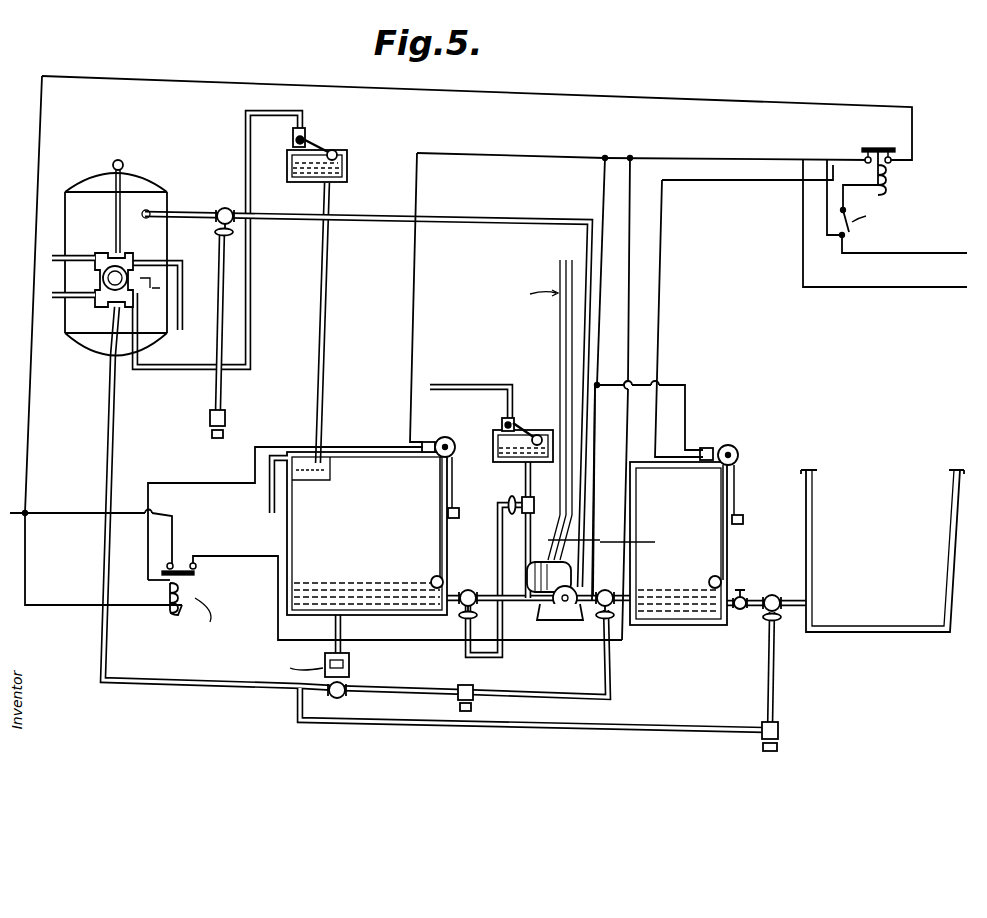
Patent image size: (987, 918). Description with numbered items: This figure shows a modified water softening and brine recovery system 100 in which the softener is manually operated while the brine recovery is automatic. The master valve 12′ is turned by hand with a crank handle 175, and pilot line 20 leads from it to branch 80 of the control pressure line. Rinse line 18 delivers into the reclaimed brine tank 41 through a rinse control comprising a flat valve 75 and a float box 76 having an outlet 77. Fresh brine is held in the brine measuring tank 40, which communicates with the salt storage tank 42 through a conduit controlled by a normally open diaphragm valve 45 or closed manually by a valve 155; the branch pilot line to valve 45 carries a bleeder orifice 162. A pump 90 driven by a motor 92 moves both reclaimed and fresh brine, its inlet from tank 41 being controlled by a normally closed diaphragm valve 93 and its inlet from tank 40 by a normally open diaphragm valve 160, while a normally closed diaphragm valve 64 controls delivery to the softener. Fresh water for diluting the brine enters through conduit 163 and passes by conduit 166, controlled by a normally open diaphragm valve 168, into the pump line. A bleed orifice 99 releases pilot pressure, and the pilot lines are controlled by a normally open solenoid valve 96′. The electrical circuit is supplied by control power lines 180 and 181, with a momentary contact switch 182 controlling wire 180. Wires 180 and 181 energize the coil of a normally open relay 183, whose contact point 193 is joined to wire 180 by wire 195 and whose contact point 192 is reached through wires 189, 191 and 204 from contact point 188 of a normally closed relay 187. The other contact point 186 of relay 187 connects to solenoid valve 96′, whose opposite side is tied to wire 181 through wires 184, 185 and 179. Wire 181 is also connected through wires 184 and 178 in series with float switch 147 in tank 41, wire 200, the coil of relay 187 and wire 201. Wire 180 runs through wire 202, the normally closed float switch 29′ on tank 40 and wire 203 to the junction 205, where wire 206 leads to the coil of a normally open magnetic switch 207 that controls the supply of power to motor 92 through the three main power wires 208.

The apparatus 100 is at (36, 214).
The wire 191 is at (218, 83).
The rinse line 18 is at (247, 134).
The flat valve 75 is at (306, 134).
The float box 76 is at (345, 152).
The normally closed diaphragm valve 64 is at (226, 207).
The master valve 12′ is at (105, 257).
The crank handle 175 is at (165, 290).
The outlet 77 is at (324, 279).
The wire 178 is at (508, 158).
The wire 204 is at (600, 212).
The wire 184 is at (712, 162).
The contact point 193 is at (864, 158).
The contact point 192 is at (893, 158).
The normally open electromagnetic relay switch 183 is at (890, 178).
The control power line 180 is at (911, 220).
The wire 195 is at (826, 212).
The momentary contact switch 182 is at (850, 225).
The wire 202 is at (664, 256).
The wire 185 is at (629, 312).
The control power line 181 is at (926, 290).
The main power wires 208 is at (570, 376).
The junction 205 is at (612, 385).
The wire 203 is at (688, 386).
The conduit 163 is at (480, 385).
The float pulley 147 is at (446, 437).
The conduit 166 is at (528, 478).
The normally open diaphragm valve 168 is at (522, 497).
The float switch 29′ is at (737, 450).
The pilot line 20 is at (108, 397).
The branch 80 is at (229, 413).
The wire 200 is at (268, 446).
The wire 206 is at (598, 494).
The brine measuring tank 40 is at (727, 540).
The wire 189 is at (70, 511).
The normally closed relay 187 is at (185, 562).
The brine reclaiming tank 41 is at (288, 538).
The contact point 188 is at (166, 566).
The contact point 186 is at (197, 567).
The normally open magnetic switch 207 is at (628, 492).
The valve 155 is at (742, 588).
The normally open diaphragm valve 45 is at (774, 594).
The motor 92 is at (530, 575).
The normally closed diaphragm valve 93 is at (468, 590).
The normally open diaphragm valve 160 is at (605, 590).
The salt storage tank 42 is at (950, 594).
The pump 90 is at (568, 612).
The wire 179 is at (540, 637).
The wire 201 is at (58, 610).
The solenoid valve 96′ is at (350, 662).
The bleed orifice 99 is at (474, 706).
The bleeder orifice 162 is at (779, 731).